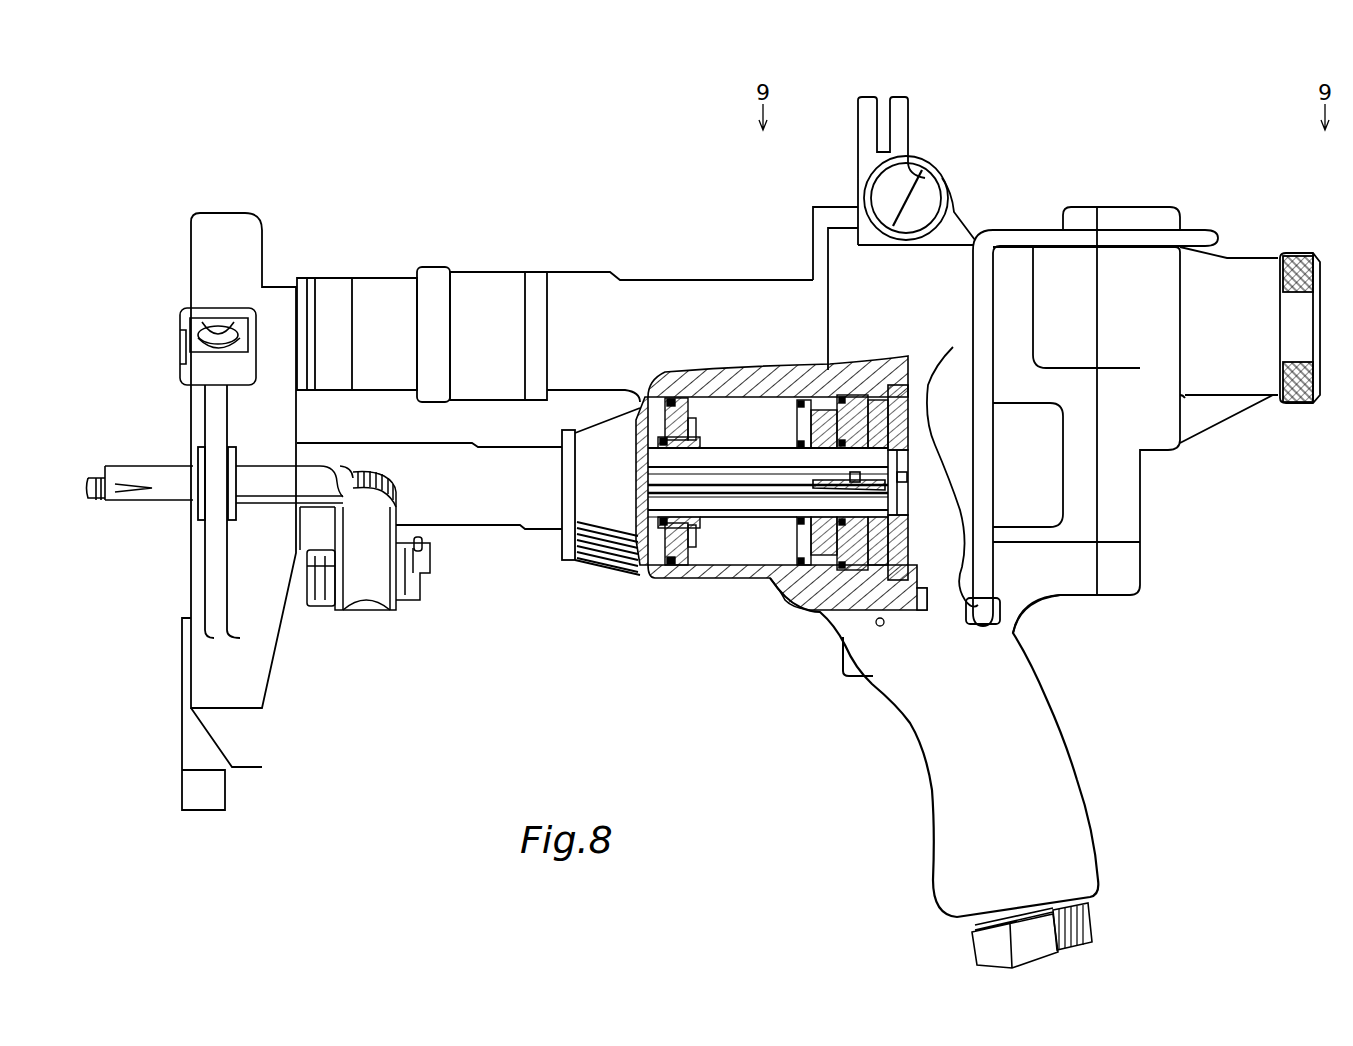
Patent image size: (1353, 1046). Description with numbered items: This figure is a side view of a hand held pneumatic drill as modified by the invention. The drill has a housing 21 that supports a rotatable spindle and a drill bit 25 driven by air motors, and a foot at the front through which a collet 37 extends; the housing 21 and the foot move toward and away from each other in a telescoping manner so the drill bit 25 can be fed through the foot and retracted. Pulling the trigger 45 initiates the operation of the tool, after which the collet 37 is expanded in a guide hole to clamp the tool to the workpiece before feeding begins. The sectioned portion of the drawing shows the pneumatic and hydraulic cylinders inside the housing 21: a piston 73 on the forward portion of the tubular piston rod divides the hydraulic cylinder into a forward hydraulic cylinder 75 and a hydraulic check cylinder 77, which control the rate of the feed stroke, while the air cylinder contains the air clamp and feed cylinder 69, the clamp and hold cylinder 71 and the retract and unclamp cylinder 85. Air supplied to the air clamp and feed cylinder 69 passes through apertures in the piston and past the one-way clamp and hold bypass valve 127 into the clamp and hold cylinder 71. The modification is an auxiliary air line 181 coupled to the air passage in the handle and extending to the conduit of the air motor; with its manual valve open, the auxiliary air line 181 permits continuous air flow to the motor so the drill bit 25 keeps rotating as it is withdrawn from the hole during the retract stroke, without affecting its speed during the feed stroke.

The housing 21 is at (777, 281).
The drill bit 25 is at (230, 326).
The collet 37 is at (116, 502).
The trigger 45 is at (841, 650).
The air clamp and feed cylinder 69 is at (816, 608).
The clamp and hold cylinder 71 is at (835, 560).
The piston 73 is at (668, 397).
The forward hydraulic cylinder 75 is at (660, 556).
The hydraulic check cylinder 77 is at (767, 550).
The retract and unclamp cylinder 85 is at (932, 424).
The clamp and hold bypass valve 127 is at (868, 540).
The auxiliary air line 181 is at (1200, 230).